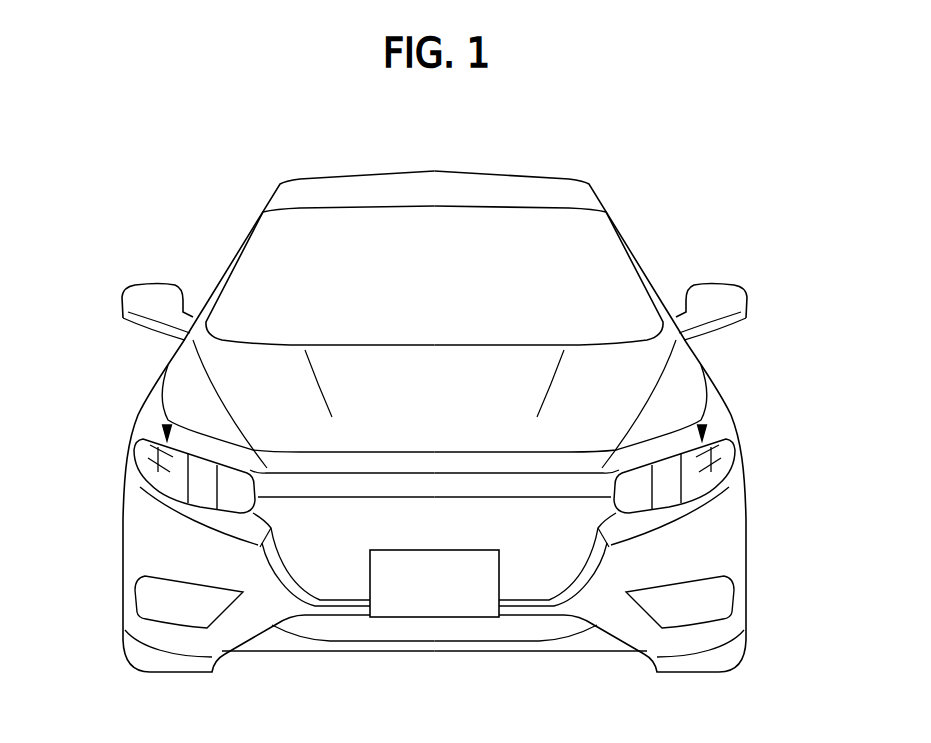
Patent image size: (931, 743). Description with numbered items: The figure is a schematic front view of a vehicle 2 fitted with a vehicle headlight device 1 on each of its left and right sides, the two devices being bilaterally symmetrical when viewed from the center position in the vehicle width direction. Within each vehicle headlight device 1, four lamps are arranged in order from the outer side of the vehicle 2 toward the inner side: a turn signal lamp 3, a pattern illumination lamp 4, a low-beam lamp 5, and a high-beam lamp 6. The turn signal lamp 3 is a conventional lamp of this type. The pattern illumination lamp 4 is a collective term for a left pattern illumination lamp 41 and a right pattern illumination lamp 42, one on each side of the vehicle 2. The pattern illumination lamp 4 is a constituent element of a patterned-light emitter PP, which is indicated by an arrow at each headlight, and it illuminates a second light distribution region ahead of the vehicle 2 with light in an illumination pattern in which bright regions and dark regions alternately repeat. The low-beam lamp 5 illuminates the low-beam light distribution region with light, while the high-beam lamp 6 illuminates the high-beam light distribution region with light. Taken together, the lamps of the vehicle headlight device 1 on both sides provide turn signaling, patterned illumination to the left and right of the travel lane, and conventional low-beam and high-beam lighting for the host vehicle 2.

The vehicle headlight device 1 is at (165, 418).
The vehicle 2 is at (553, 172).
The turn signal lamp 3 is at (143, 467).
The pattern illumination lamp 4 is at (170, 468).
The left pattern illumination lamp 41 is at (696, 485).
The right pattern illumination lamp 42 is at (173, 485).
The low-beam lamp 5 is at (203, 498).
The high-beam lamp 6 is at (233, 507).
The patterned-light emitter PP is at (165, 445).